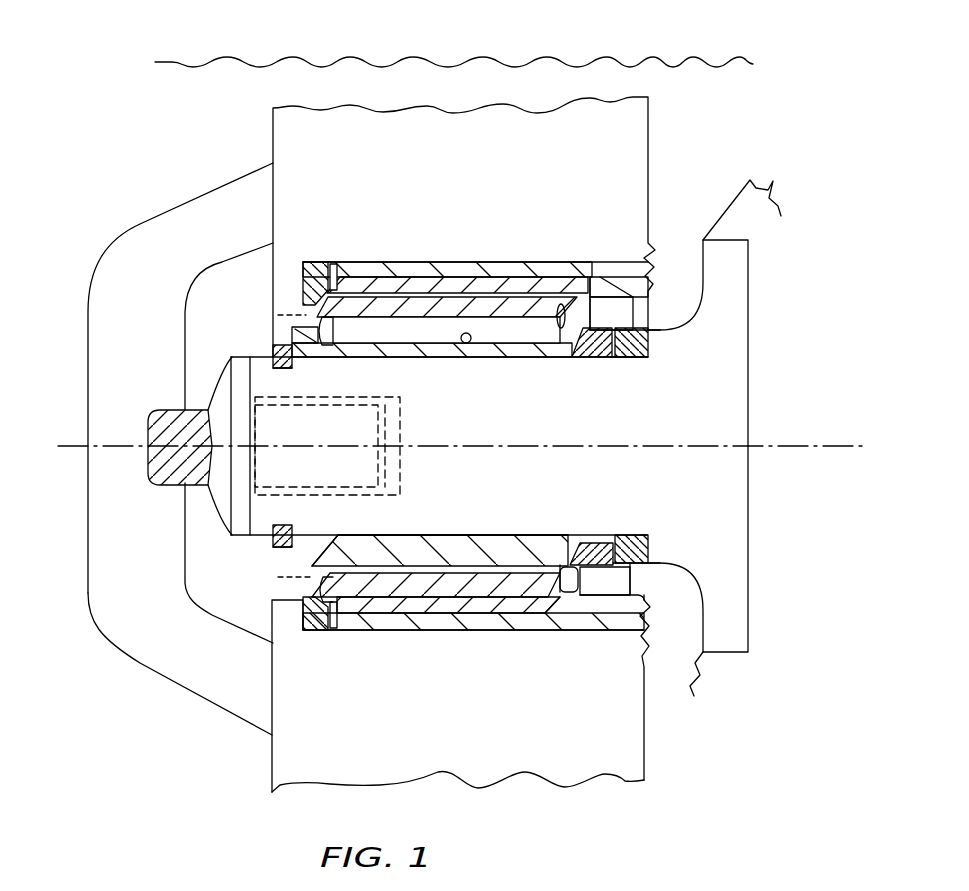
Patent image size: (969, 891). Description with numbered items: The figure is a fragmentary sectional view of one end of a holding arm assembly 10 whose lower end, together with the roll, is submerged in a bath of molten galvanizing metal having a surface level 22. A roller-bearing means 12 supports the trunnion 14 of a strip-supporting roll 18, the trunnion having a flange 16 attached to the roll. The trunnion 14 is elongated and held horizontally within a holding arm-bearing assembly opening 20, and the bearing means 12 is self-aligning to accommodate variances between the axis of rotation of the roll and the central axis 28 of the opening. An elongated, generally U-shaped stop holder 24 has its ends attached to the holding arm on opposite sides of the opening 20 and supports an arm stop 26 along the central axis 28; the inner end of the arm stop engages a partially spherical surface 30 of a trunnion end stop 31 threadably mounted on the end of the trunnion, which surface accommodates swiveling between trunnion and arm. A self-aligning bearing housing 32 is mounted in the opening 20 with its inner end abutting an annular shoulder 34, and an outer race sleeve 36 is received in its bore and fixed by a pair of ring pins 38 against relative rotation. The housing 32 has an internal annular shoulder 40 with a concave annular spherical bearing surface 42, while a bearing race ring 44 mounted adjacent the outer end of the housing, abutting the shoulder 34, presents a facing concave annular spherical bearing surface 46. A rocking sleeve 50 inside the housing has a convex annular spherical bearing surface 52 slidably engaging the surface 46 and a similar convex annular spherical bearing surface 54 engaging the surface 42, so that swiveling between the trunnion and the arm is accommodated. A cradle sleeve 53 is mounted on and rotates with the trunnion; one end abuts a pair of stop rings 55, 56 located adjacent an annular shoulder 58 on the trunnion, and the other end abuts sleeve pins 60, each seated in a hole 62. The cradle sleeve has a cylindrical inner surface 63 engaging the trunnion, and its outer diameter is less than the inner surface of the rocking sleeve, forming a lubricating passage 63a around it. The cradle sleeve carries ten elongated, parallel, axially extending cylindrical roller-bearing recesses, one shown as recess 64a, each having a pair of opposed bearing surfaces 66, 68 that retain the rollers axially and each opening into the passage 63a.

The holding arm assembly 10 is at (648, 132).
The roller-bearing means 12 is at (588, 260).
The trunnion 14 is at (275, 596).
The flange 16 is at (692, 672).
The strip-supporting roll 18 is at (772, 176).
The holding arm-bearing assembly opening 20 is at (612, 262).
The surface level 22 is at (247, 62).
The stop holder 24 is at (86, 527).
The arm stop 26 is at (148, 452).
The central axis 28 is at (112, 446).
The partially spherical surface 30 is at (212, 505).
The trunnion end stop 31 is at (257, 537).
The self-aligning bearing housing 32 is at (548, 612).
The annular shoulder 34 is at (293, 597).
The outer race sleeve 36 is at (497, 606).
The ring pins 38 is at (335, 262).
The internal annular shoulder 40 is at (565, 603).
The concave annular spherical bearing surface 42 is at (648, 540).
The bearing race ring 44 is at (300, 612).
The concave annular spherical bearing surface 46 is at (395, 540).
The rocking sleeve 50 is at (422, 585).
The convex annular spherical bearing surface 52 is at (333, 545).
The cradle sleeve 53 is at (470, 545).
The convex annular spherical bearing surface 54 is at (640, 595).
The stop ring 55 is at (650, 567).
The stop ring 56 is at (645, 357).
The annular shoulder 58 is at (648, 345).
The sleeve pins 60 is at (275, 352).
The hole 62 is at (287, 365).
The cylindrical inner surface 63 is at (545, 538).
The lubricating passage 63a is at (562, 305).
The roller-bearing recess 64a is at (468, 344).
The bearing surface 66 is at (320, 330).
The bearing surface 68 is at (578, 352).